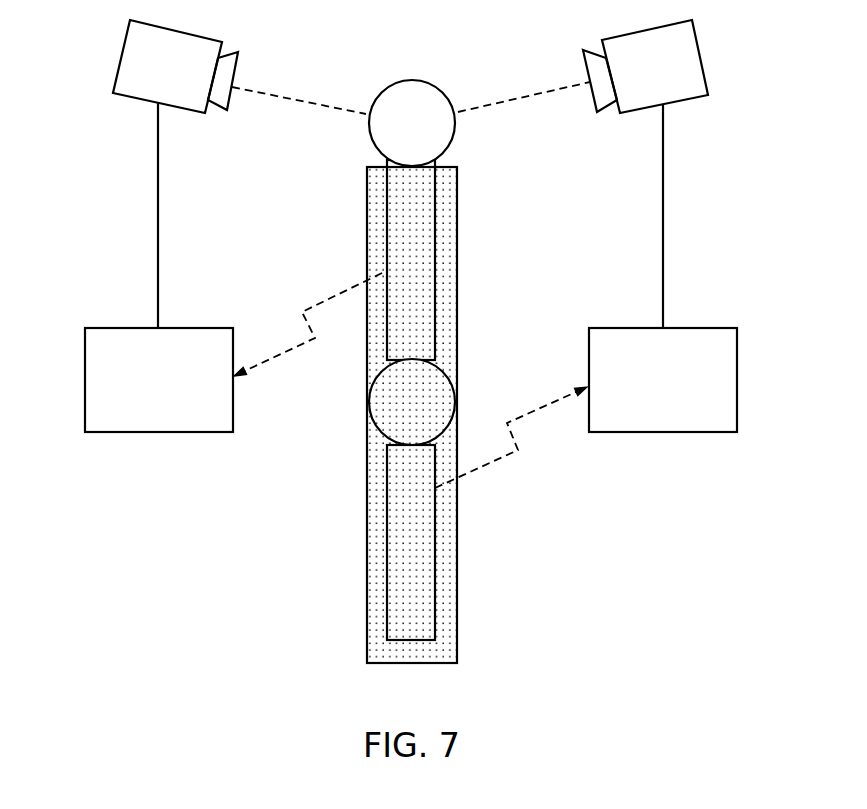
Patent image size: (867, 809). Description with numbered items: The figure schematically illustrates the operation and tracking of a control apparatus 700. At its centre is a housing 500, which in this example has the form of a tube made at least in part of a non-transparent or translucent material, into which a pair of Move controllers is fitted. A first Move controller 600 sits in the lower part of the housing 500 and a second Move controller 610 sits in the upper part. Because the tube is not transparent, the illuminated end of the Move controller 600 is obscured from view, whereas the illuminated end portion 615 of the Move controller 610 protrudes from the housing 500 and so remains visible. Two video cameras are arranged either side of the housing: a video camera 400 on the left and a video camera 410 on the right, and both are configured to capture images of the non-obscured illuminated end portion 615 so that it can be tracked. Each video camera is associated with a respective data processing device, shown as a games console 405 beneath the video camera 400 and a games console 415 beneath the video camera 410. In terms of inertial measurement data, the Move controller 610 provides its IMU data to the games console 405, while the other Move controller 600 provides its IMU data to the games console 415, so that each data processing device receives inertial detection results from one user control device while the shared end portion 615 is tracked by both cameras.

The video camera 400 is at (124, 53).
The games console 405 is at (85, 380).
The video camera 410 is at (700, 55).
The games console 415 is at (737, 380).
The housing 500 is at (457, 633).
The Move controller 600 is at (435, 545).
The Move controller 610 is at (435, 262).
The illuminated end portion 615 is at (433, 62).
The control apparatus 700 is at (335, 635).